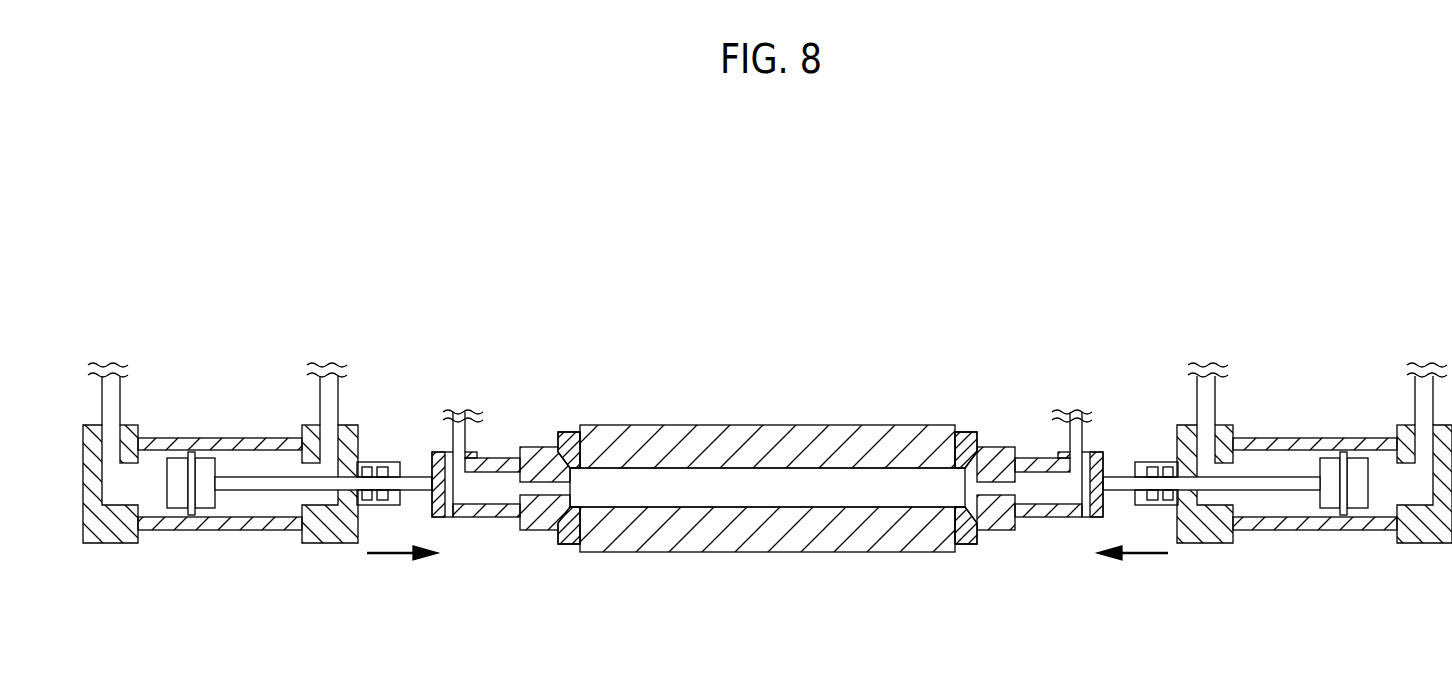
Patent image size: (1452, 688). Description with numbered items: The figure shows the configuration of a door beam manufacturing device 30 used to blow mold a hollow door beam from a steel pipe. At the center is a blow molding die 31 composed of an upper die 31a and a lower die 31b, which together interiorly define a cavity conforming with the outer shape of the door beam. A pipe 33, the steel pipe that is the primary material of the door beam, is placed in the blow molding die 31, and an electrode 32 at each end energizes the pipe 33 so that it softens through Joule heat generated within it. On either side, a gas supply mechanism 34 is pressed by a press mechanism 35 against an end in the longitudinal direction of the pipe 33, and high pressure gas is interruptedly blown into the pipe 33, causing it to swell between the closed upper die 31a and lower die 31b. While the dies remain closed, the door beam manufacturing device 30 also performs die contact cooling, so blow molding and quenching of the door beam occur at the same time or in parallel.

The door beam manufacturing device 30 is at (963, 338).
The blow molding die 31 is at (859, 374).
The upper die 31a is at (747, 457).
The lower die 31b is at (845, 527).
The electrode 32 is at (574, 431).
The pipe 33 is at (907, 487).
The gas supply mechanism 34 is at (480, 517).
The press mechanism 35 is at (230, 530).